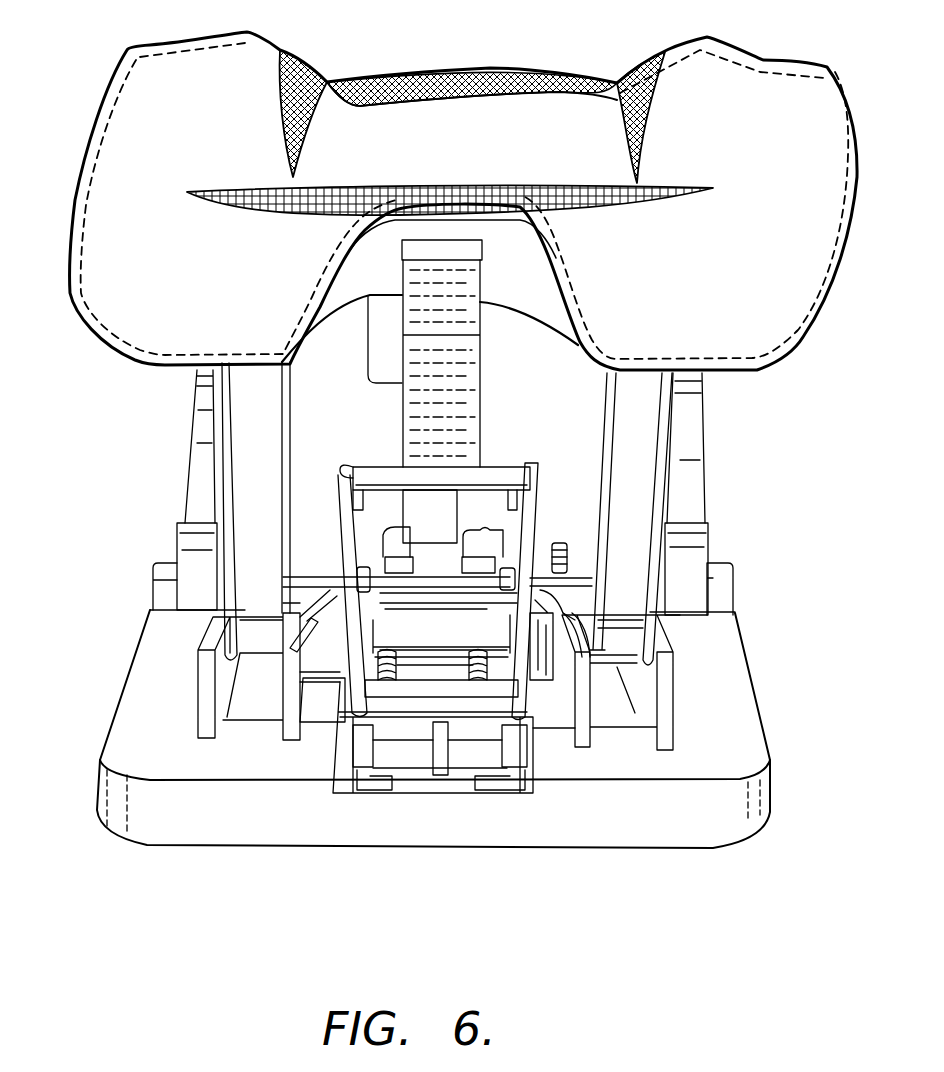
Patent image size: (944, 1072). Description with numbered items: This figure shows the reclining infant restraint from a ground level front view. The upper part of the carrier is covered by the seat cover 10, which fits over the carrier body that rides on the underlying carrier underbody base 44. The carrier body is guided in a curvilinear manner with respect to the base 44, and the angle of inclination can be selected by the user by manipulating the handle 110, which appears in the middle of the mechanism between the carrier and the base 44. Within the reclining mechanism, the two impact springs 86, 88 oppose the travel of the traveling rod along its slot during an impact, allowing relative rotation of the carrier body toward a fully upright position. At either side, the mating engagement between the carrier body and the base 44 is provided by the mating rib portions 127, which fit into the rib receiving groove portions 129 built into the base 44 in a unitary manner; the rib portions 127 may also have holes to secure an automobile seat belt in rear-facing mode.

The seat cover 10 is at (753, 97).
The carrier underbody base 44 is at (260, 820).
The impact spring 86 is at (397, 680).
The impact spring 88 is at (455, 677).
The handle 110 is at (493, 463).
The mating rib portion 127 is at (250, 457).
The rib receiving groove portion 129 is at (230, 712).